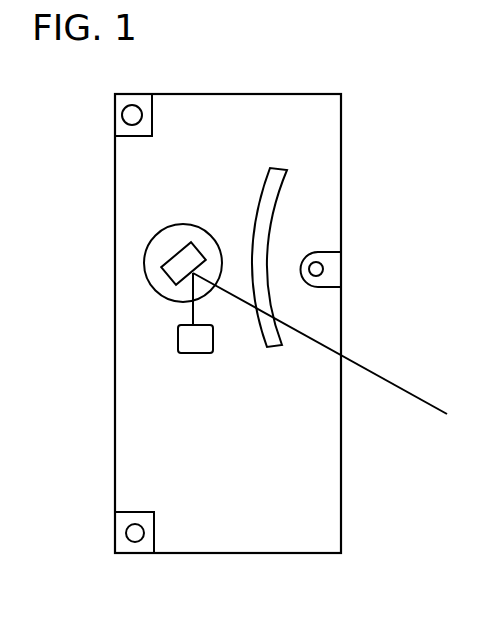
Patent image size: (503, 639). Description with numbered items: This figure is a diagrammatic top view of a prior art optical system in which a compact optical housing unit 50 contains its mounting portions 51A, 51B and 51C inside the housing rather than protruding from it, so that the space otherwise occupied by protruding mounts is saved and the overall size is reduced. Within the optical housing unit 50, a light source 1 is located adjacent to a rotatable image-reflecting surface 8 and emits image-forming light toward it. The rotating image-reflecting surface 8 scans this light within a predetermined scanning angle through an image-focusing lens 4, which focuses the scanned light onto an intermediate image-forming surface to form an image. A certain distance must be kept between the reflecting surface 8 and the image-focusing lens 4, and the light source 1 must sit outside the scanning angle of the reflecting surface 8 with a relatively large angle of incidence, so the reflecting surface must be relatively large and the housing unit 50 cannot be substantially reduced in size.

The optical housing unit 50 is at (282, 94).
The mounting portion 51A is at (330, 268).
The mounting portion 51B is at (133, 100).
The mounting portion 51C is at (140, 548).
The image-focusing lens 4 is at (285, 172).
The rotatable image-reflecting surface 8 is at (172, 252).
The light source 1 is at (213, 345).